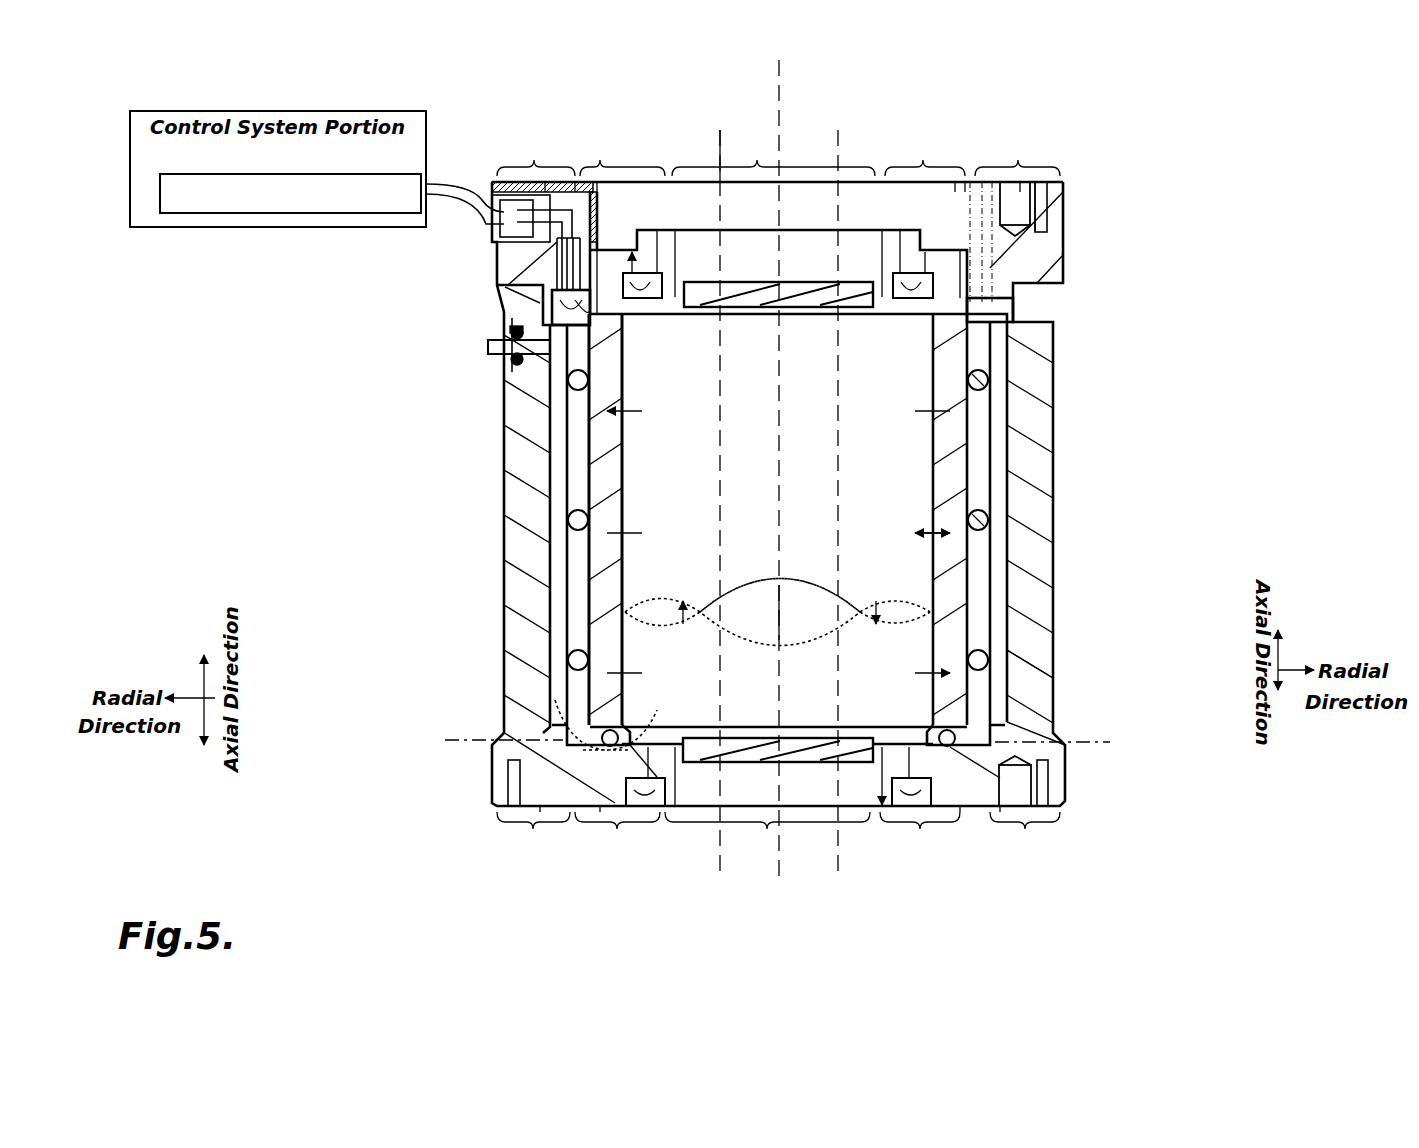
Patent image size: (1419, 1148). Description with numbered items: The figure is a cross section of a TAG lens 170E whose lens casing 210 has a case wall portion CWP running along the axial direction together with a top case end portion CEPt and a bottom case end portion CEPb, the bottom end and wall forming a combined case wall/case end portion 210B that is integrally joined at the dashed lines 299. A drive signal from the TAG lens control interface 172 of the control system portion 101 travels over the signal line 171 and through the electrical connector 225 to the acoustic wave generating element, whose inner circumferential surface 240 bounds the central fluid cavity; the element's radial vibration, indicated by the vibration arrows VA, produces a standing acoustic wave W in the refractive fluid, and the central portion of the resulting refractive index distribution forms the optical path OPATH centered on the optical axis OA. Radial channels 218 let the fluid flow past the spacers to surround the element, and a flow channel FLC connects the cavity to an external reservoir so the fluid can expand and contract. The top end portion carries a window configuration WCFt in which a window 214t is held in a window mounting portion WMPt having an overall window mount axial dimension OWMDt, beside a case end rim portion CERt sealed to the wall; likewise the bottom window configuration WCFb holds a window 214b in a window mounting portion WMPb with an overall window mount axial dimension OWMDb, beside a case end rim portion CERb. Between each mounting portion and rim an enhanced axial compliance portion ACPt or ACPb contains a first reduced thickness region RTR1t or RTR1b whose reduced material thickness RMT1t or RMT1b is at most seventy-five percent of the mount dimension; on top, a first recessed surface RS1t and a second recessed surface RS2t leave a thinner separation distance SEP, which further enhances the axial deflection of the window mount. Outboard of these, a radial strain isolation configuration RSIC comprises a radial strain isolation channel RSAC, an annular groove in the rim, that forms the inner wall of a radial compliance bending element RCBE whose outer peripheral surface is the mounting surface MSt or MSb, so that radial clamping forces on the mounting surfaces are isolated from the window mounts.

The control system portion 101 is at (213, 111).
The TAG lens control interface 172 is at (195, 174).
The signal line 171 is at (440, 200).
The electrical connector 225 is at (570, 285).
The reduced material thickness RMT1t is at (512, 328).
The flow channel FLC is at (484, 349).
The first reduced thickness region RTR1t is at (570, 382).
The first recessed surface RS1t is at (560, 412).
The combined case wall/case end portion 210B is at (268, 500).
The case wall portion CWP is at (553, 718).
The bottom case end portion CEPb is at (500, 748).
The dashed lines 299 is at (468, 738).
The mounting surface MSb is at (500, 780).
The radial strain isolation configuration RSIC is at (486, 816).
The case end rim portion CERb is at (545, 822).
The enhanced axial compliance portion ACPb is at (600, 818).
The first reduced thickness region RTR1b is at (648, 812).
The overall window mount axial dimension OWMDb is at (648, 808).
The reduced material thickness RMT1b is at (672, 808).
The window mounting portion WMPb is at (800, 764).
The bottom window 214b is at (810, 764).
The window configuration WCFb is at (905, 808).
The second recessed surface RS2t is at (612, 180).
The enhanced axial compliance portion ACPt is at (585, 178).
The case end rim portion CERt is at (548, 172).
The separation distance SEP is at (662, 262).
The optical path OPATH is at (755, 200).
The overall window mount axial dimension OWMDt is at (795, 282).
The optical axis OA is at (779, 78).
The window mounting portion WMPt is at (788, 282).
The top window 214t is at (806, 284).
The window configuration WCFt is at (965, 320).
The radial strain isolation channel RSAC is at (1040, 196).
The radial compliance bending element RCBE is at (1046, 216).
The mounting surface MSt is at (1075, 212).
The top case end portion CEPt is at (1075, 262).
The lens casing 210 is at (1285, 265).
The TAG lens 170E is at (1312, 128).
The standing acoustic wave W is at (930, 600).
The radial channels 218 is at (1053, 700).
The vibration arrows VA is at (942, 530).
The inner circumferential surface 240 is at (622, 476).